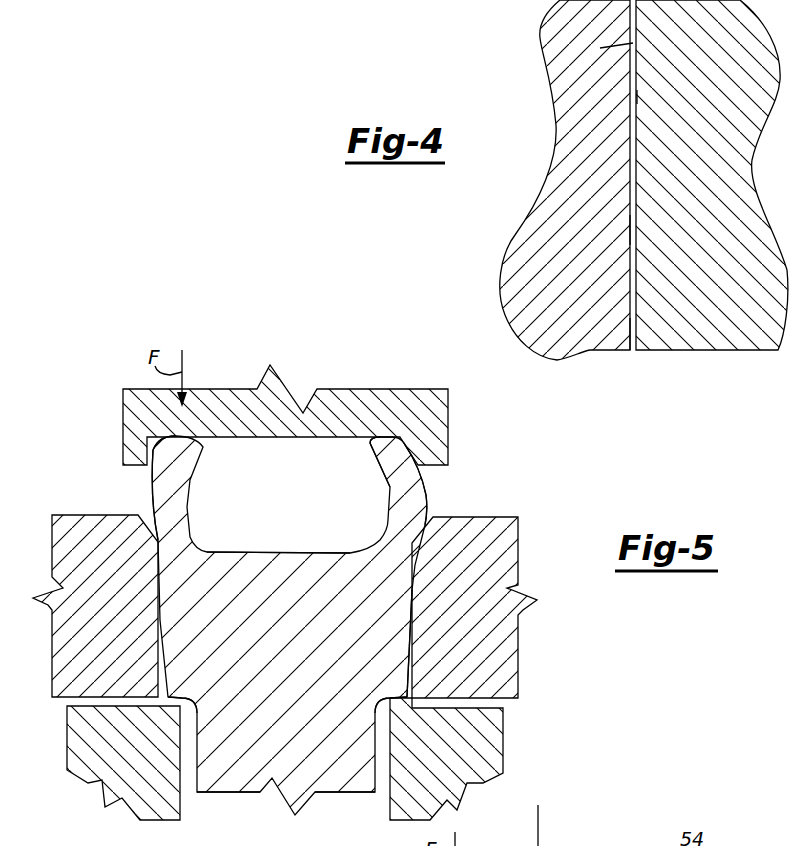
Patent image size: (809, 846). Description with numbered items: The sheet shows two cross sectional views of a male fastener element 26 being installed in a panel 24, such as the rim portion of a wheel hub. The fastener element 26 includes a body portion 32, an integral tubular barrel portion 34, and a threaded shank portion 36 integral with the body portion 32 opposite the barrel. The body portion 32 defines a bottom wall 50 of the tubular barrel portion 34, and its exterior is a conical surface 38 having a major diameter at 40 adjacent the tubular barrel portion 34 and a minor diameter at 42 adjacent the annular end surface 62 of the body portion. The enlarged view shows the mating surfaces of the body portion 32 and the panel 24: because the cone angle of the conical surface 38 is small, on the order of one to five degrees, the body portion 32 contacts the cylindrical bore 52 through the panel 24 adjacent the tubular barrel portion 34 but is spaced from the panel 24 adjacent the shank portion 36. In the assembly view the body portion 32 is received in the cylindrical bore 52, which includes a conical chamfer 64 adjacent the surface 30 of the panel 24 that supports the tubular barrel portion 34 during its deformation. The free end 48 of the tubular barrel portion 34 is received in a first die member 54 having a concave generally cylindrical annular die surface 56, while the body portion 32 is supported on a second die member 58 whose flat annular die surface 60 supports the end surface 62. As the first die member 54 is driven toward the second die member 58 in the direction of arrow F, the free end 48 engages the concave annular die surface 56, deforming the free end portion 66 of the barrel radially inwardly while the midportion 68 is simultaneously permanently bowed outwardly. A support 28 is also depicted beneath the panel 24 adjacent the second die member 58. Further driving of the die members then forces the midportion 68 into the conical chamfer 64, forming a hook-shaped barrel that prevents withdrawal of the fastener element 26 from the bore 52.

In FIG. 4, the panel 24 is at (608, 184).
In FIG. 5, the panel 24 is at (132, 631).
In FIG. 5, the fastener element 26 is at (341, 805).
In FIG. 5, the lower right support 28 is at (483, 708).
In FIG. 5, the surface of the panel 30 is at (513, 518).
In FIG. 4, the body portion 32 is at (708, 172).
In FIG. 5, the body portion 32 is at (315, 649).
In FIG. 5, the tubular barrel portion 34 is at (150, 492).
In FIG. 5, the shank portion 36 is at (225, 788).
In FIG. 4, the conical surface 38 is at (633, 230).
In FIG. 5, the conical surface 38 is at (410, 658).
In FIG. 4, the major diameter 40 is at (633, 43).
In FIG. 4, the minor diameter 42 is at (635, 324).
In FIG. 5, the free end 48 is at (372, 433).
In FIG. 5, the bottom wall 50 is at (257, 553).
In FIG. 4, the cylindrical bore 52 is at (637, 97).
In FIG. 5, the first die member 54 is at (403, 389).
In FIG. 5, the concave generally cylindrical annular die surface 56 is at (163, 441).
In FIG. 5, the second die member 58 is at (78, 748).
In FIG. 5, the flat annular die surface 60 is at (167, 697).
In FIG. 5, the end surface 62 is at (397, 705).
In FIG. 5, the conical chamfer 64 is at (429, 516).
In FIG. 5, the free end portion 66 is at (390, 488).
In FIG. 5, the midportion 68 is at (417, 477).